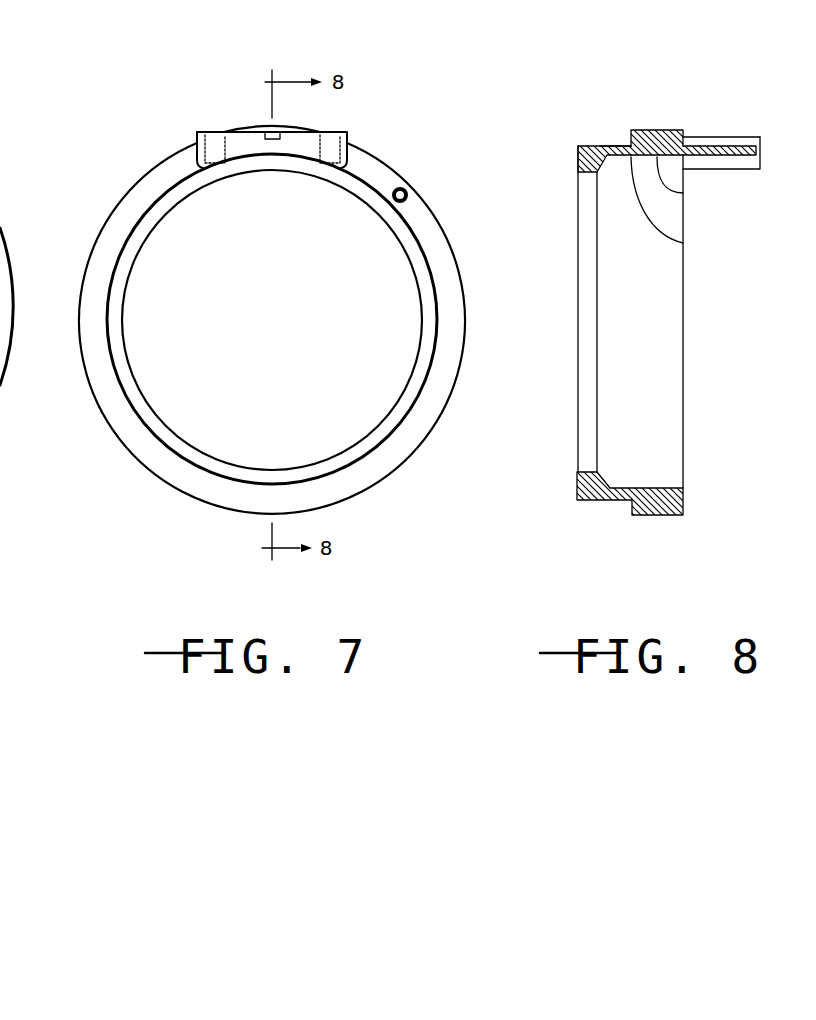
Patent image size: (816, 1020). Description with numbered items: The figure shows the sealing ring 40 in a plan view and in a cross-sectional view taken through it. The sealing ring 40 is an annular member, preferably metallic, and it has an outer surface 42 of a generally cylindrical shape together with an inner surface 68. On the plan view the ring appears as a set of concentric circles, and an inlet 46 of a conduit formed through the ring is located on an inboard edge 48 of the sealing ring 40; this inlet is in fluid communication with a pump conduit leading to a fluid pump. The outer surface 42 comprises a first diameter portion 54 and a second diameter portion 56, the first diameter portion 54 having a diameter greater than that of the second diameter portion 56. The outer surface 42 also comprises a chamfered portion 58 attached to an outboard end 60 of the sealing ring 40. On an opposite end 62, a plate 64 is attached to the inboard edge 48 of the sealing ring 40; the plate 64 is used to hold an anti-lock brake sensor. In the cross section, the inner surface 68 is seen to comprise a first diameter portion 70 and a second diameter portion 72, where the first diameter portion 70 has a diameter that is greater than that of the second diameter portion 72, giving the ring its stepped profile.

In FIG. 7, the sealing ring 40 is at (136, 150).
In FIG. 8, the sealing ring 40 is at (581, 124).
In FIG. 7, the outer surface 42 is at (452, 247).
In FIG. 8, the outer surface 42 is at (610, 503).
In FIG. 7, the inlet 46 is at (404, 187).
In FIG. 7, the inboard edge 48 is at (420, 207).
In FIG. 8, the first diameter portion 54 is at (653, 130).
In FIG. 8, the second diameter portion 56 is at (600, 146).
In FIG. 8, the chamfered portion 58 is at (583, 145).
In FIG. 8, the outboard end 60 is at (578, 167).
In FIG. 8, the opposite end 62 is at (762, 150).
In FIG. 7, the plate 64 is at (305, 143).
In FIG. 8, the plate 64 is at (715, 136).
In FIG. 7, the inner surface 68 is at (163, 422).
In FIG. 8, the inner surface 68 is at (683, 195).
In FIG. 8, the first diameter portion 70 is at (683, 244).
In FIG. 8, the second diameter portion 72 is at (578, 217).